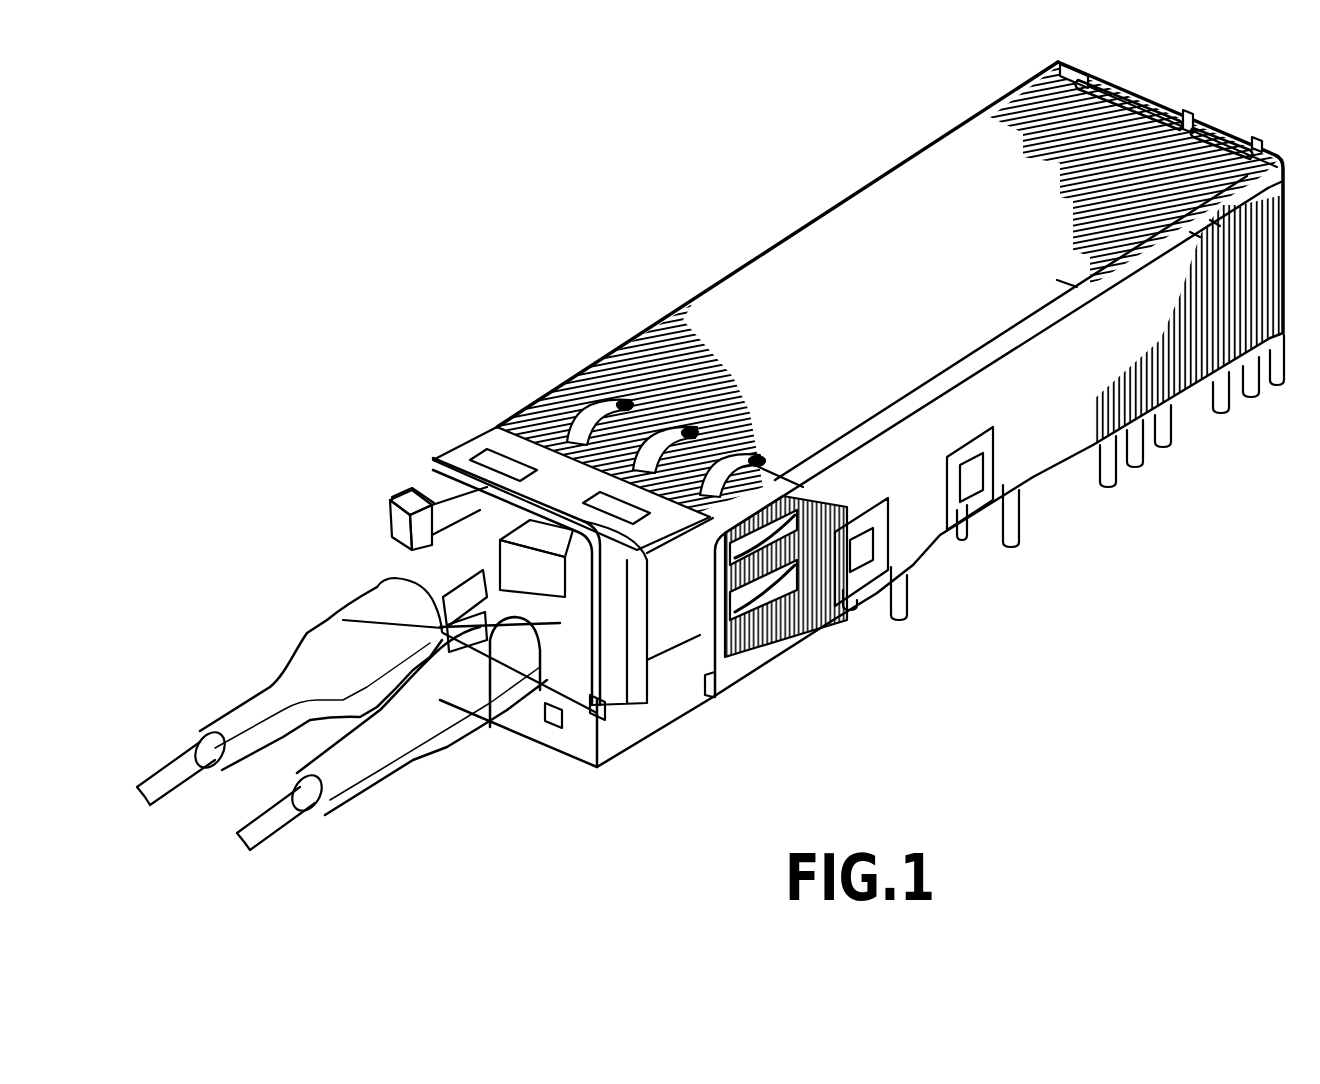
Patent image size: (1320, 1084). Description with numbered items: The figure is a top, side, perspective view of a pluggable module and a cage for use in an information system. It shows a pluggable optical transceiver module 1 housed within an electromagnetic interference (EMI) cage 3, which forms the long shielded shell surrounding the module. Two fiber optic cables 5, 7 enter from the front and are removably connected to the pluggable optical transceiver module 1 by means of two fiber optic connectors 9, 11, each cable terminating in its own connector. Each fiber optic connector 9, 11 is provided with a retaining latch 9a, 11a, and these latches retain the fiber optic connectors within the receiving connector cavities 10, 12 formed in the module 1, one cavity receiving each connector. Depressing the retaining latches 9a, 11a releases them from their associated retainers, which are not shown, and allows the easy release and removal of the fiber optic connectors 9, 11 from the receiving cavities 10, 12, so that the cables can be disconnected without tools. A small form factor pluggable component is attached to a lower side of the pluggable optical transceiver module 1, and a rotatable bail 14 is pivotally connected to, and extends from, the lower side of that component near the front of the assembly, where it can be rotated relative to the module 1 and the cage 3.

The pluggable optical transceiver module 1 is at (687, 600).
The electromagnetic interference (EMI) cage 3 is at (1063, 410).
The fiber optic cable 5 is at (180, 770).
The fiber optic cable 7 is at (290, 807).
The fiber optic connector 9 is at (407, 577).
The retaining latch 9a is at (390, 507).
The receiving connector cavity 10 is at (393, 533).
The fiber optic connector 11 is at (530, 625).
The retaining latch 11a is at (440, 627).
The receiving connector cavity 12 is at (600, 562).
The rotatable bail 14 is at (437, 457).